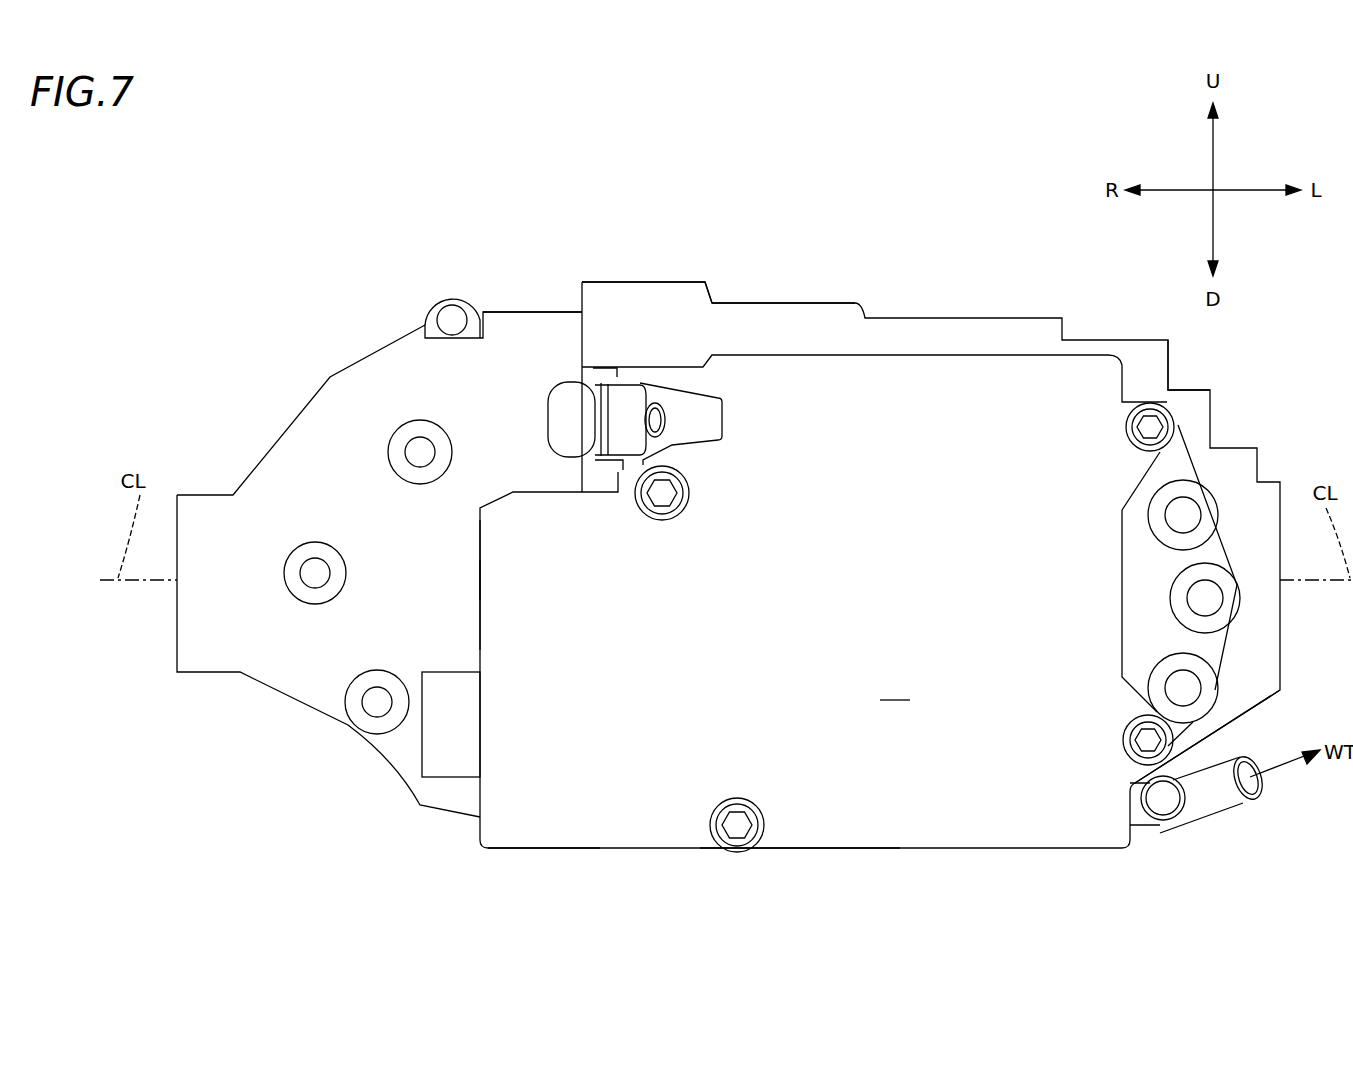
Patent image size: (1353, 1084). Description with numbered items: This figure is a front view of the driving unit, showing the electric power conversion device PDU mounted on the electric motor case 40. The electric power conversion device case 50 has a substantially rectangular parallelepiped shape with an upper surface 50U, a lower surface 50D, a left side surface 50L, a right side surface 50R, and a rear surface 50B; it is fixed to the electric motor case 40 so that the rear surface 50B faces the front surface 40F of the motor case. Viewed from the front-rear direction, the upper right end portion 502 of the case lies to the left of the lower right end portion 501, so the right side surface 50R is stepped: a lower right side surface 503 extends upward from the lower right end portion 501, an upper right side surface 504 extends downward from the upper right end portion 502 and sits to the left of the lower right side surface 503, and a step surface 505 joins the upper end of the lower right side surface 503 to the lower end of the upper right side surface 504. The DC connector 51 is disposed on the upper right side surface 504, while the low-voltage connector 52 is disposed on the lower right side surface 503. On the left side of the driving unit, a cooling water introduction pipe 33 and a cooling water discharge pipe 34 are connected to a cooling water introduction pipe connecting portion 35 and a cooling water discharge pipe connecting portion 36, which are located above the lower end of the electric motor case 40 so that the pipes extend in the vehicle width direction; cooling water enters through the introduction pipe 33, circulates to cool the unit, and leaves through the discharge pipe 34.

The electric motor case 40 is at (365, 378).
The front surface of electric motor case 40F is at (518, 437).
The low-voltage connector 52 is at (438, 767).
The electric power conversion device case 50 is at (948, 388).
The electric power conversion device PDU is at (850, 390).
The upper surface 50U is at (768, 352).
The left side surface 50L is at (1123, 382).
The right side surface 50R is at (480, 545).
The lower surface 50D is at (817, 850).
The rear surface 50B is at (895, 690).
The lower right end portion 501 is at (488, 850).
The upper right end portion 502 is at (592, 355).
The lower right side surface 503 is at (480, 607).
The upper right side surface 504 is at (607, 487).
The step surface 505 is at (555, 477).
The DC connector 51 is at (567, 437).
The cooling water introduction pipe 33 is at (1178, 772).
The cooling water discharge pipe 34 is at (1235, 797).
The cooling water introduction pipe connecting portion 35 is at (1148, 806).
The cooling water discharge pipe connecting portion 36 is at (1135, 808).